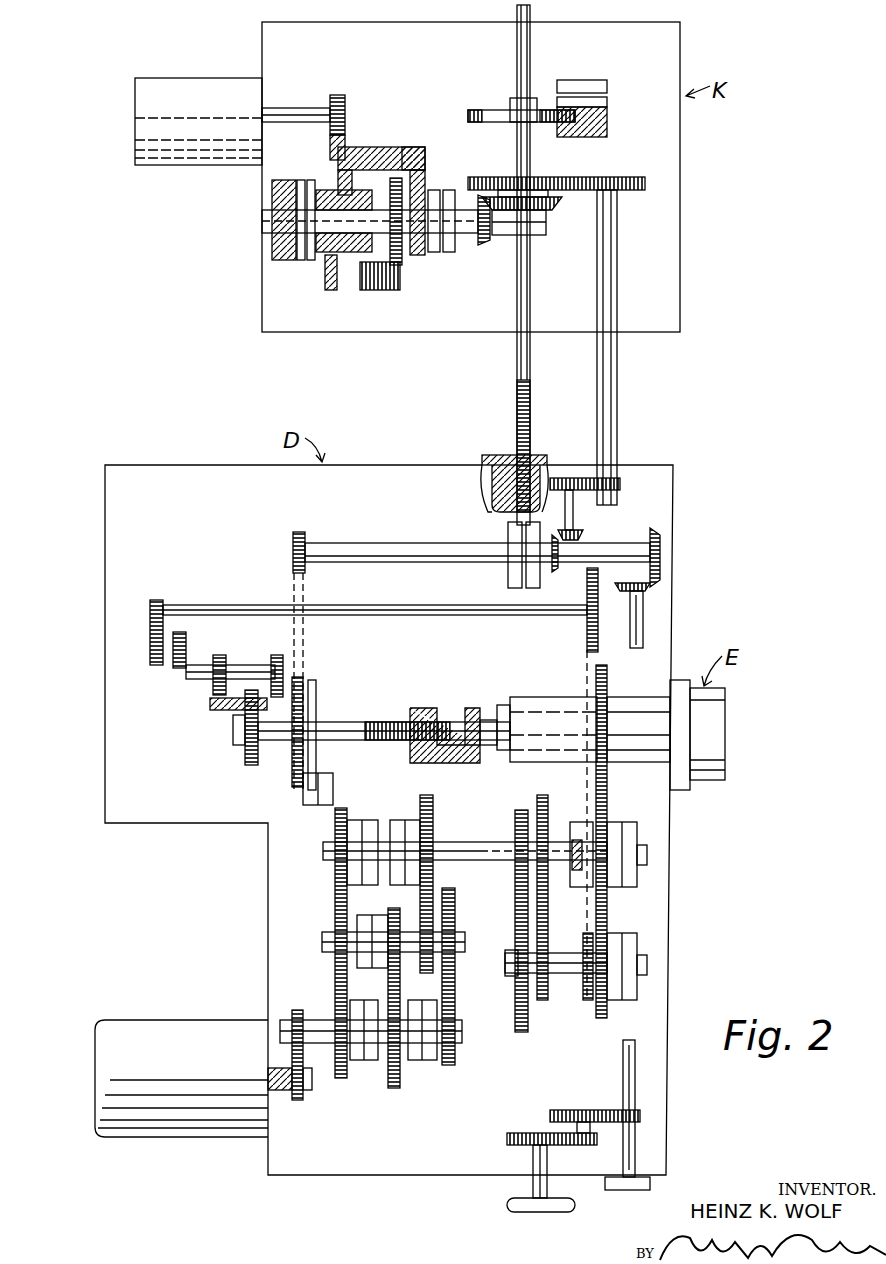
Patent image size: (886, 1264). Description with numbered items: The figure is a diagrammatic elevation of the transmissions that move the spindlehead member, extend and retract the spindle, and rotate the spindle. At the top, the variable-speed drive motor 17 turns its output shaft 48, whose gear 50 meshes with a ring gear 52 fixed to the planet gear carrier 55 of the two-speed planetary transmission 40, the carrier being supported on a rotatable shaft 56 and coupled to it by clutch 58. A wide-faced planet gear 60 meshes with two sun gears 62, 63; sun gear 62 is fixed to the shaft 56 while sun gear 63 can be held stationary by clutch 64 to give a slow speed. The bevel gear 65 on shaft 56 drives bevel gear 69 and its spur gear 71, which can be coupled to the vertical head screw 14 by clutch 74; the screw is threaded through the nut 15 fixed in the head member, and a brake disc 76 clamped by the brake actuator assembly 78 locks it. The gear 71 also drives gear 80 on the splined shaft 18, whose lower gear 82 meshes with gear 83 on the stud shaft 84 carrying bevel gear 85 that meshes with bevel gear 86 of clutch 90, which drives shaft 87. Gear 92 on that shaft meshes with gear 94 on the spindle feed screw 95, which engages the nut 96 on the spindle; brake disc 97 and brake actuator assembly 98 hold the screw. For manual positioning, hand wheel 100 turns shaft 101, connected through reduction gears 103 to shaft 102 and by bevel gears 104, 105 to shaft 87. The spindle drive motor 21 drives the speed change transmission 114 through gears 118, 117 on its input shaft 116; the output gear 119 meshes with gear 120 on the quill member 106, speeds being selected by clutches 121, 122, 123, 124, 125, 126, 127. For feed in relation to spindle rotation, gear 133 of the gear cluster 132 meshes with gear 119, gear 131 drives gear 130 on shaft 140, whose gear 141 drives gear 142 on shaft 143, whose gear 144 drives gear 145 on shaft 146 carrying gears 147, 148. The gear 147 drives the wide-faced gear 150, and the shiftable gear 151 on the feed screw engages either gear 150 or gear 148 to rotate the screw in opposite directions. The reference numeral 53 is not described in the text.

The vertical head screw 14 is at (517, 358).
The nut 15 is at (492, 456).
The variable-speed drive motor 17 is at (200, 78).
The splined shaft 18 is at (607, 395).
The spindle drive motor 21 is at (155, 1020).
The two-speed planetary transmission 40 is at (447, 133).
The output shaft 48 is at (318, 108).
The gear 50 is at (338, 95).
The ring gear 52 is at (328, 300).
The clutch housing 53 is at (391, 138).
The planet gear carrier 55 is at (413, 150).
The rotatable shaft 56 is at (272, 221).
The clutch 58 is at (450, 260).
The wide-faced planet gear 60 is at (372, 292).
The sun gear 62 is at (412, 190).
The sun gear 63 is at (393, 178).
The clutch 64 is at (301, 262).
The bevel gear 65 is at (483, 246).
The bevel gear 69 is at (548, 204).
The spur gear 71 is at (550, 177).
The clutch 74 is at (546, 234).
The brake disc 76 is at (500, 110).
The brake actuator assembly 78 is at (607, 130).
The gear 80 is at (620, 178).
The gear 82 is at (620, 484).
The gear 83 is at (562, 478).
The stud shaft 84 is at (573, 516).
The bevel gear 85 is at (583, 536).
The bevel gear 86 is at (558, 566).
The shaft 87 is at (385, 545).
The clutch 90 is at (508, 580).
The gear 92 is at (293, 536).
The gear 94 is at (292, 786).
The spindle feed screw 95 is at (340, 722).
The nut 96 is at (422, 708).
The brake disc 97 is at (313, 690).
The brake actuator assembly 98 is at (314, 805).
The hand wheel 100 is at (520, 1211).
The shaft 101 is at (533, 1160).
The shaft 102 is at (643, 620).
The reduction gears 103 is at (581, 1102).
The bevel gear 104 is at (652, 590).
The bevel gear 105 is at (658, 530).
The quill member 106 is at (550, 682).
The speed change transmission 114 is at (258, 926).
The input shaft 116 is at (320, 1020).
The gear 117 is at (290, 1018).
The gear 118 is at (298, 1100).
The output gear 119 is at (607, 813).
The gear 120 is at (607, 690).
The clutch 121 is at (430, 1065).
The clutch 122 is at (357, 920).
The clutch 123 is at (362, 820).
The clutch 124 is at (405, 820).
The clutch 125 is at (572, 887).
The clutch 126 is at (637, 836).
The clutch 127 is at (637, 940).
The gear 130 is at (587, 634).
The gear 131 is at (583, 1003).
The gear cluster 132 is at (606, 1022).
The gear 133 is at (595, 933).
The shaft 140 is at (400, 605).
The gear 141 is at (153, 600).
The gear 142 is at (160, 667).
The shaft 143 is at (176, 668).
The gear 144 is at (180, 632).
The gear 145 is at (182, 710).
The shaft 146 is at (248, 665).
The gear 147 is at (222, 655).
The gear 148 is at (283, 660).
The wide-faced gear 150 is at (232, 712).
The gear 151 is at (253, 765).